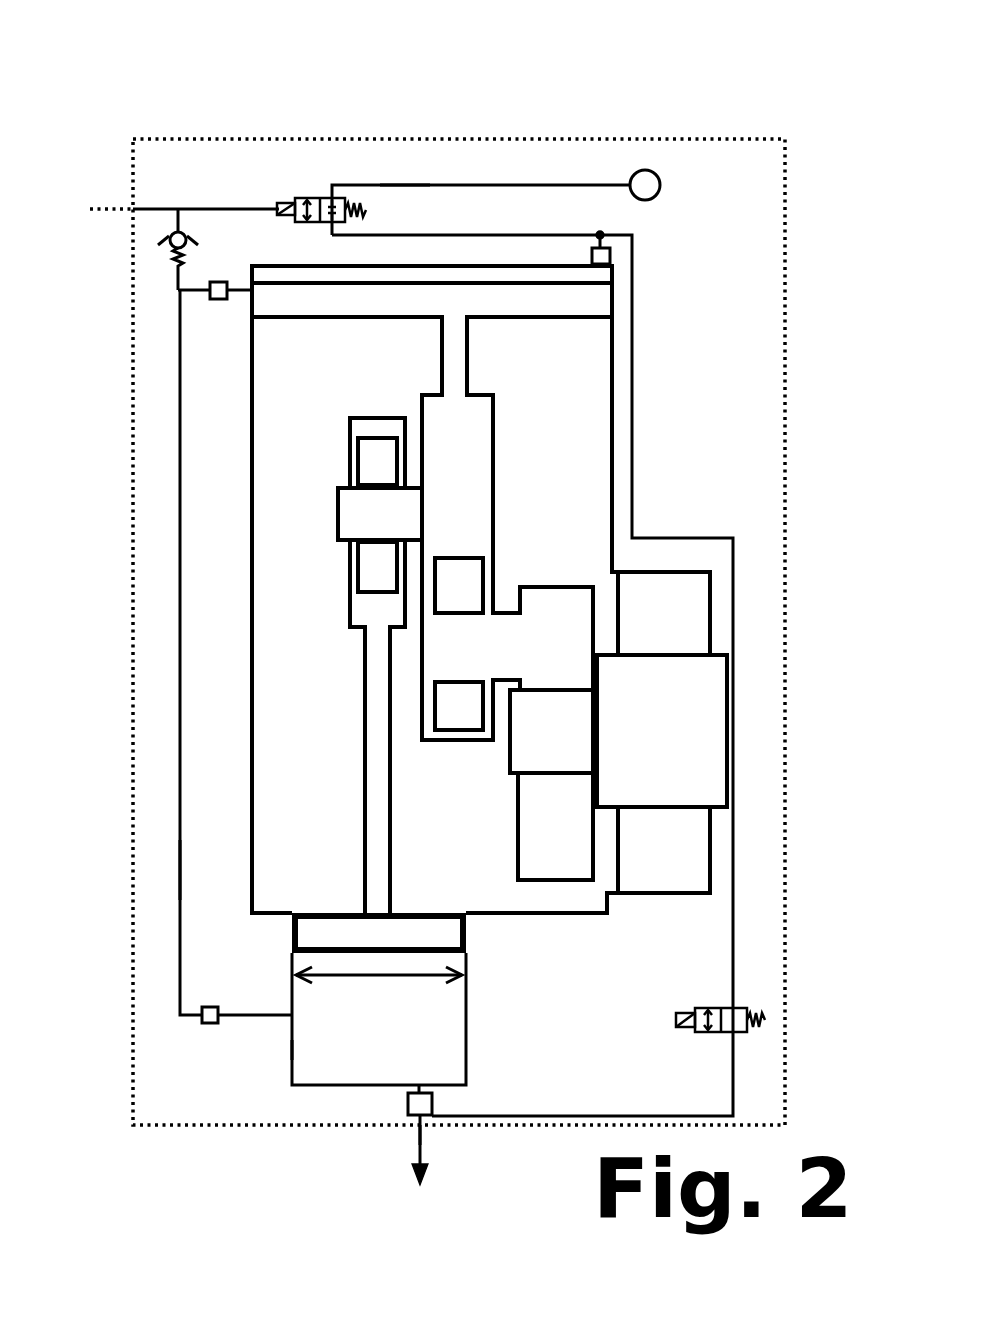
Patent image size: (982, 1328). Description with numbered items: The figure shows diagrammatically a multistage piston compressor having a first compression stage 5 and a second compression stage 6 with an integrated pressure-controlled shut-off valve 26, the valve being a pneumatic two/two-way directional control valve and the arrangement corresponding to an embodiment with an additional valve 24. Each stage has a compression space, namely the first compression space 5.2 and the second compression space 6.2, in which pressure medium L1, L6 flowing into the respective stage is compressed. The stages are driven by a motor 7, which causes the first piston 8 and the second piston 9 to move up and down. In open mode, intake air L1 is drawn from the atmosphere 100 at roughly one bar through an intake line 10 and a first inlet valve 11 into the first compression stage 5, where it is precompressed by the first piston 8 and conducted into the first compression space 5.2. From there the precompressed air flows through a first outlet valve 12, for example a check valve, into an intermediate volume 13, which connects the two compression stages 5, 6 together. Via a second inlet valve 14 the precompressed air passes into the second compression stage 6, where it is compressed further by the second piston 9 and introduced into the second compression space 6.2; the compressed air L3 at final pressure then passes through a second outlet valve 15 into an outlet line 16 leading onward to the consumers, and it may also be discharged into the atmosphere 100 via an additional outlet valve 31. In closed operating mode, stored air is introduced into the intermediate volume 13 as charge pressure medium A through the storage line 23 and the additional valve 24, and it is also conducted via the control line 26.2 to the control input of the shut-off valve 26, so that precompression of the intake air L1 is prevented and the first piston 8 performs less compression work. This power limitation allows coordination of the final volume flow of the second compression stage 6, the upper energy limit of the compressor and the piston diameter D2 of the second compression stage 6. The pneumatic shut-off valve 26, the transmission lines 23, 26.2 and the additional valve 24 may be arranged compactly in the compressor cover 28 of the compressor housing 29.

The first compression stage 5 is at (663, 325).
The first compression space 5.2 is at (463, 270).
The second compression stage 6 is at (490, 982).
The second compression space 6.2 is at (415, 1054).
The motor 7 is at (680, 748).
The first piston 8 is at (530, 307).
The second piston 9 is at (317, 930).
The intake line 10 is at (547, 183).
The first inlet valve 11 is at (610, 257).
The first outlet valve 12 is at (222, 299).
The intermediate volume 13 is at (183, 662).
The second inlet valve 14 is at (215, 1027).
The second outlet valve 15 is at (433, 1118).
The outlet line 16 is at (418, 1133).
The storage line 23 is at (136, 208).
The additional valve 24 is at (196, 208).
The shut-off valve 26 is at (311, 196).
The control line 26.2 is at (243, 208).
The compressor cover 28 is at (592, 152).
The compressor housing 29 is at (783, 517).
The additional outlet valve 31 is at (695, 1030).
The atmosphere 100 is at (647, 197).
The charge pressure medium A is at (168, 217).
The piston diameter D2 is at (403, 977).
The intake air L1 is at (401, 184).
The compressed air L3 is at (422, 1157).
The pressure medium L6 is at (183, 868).